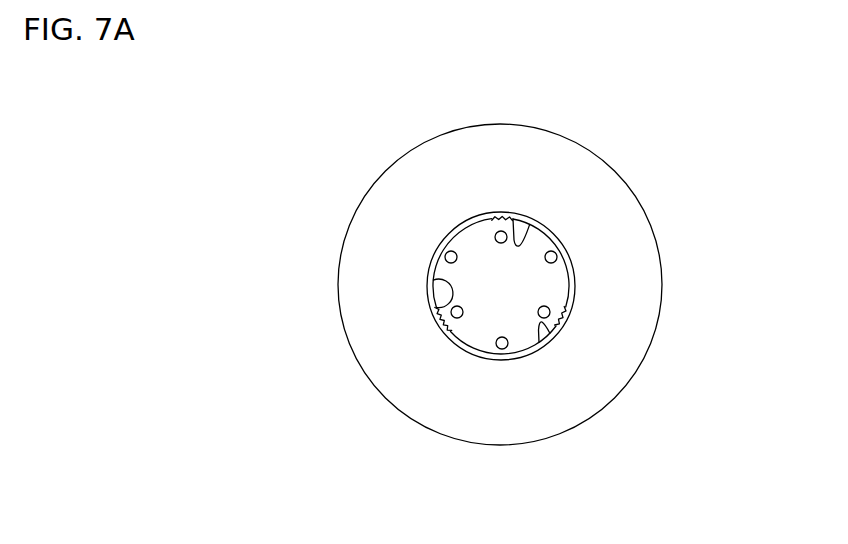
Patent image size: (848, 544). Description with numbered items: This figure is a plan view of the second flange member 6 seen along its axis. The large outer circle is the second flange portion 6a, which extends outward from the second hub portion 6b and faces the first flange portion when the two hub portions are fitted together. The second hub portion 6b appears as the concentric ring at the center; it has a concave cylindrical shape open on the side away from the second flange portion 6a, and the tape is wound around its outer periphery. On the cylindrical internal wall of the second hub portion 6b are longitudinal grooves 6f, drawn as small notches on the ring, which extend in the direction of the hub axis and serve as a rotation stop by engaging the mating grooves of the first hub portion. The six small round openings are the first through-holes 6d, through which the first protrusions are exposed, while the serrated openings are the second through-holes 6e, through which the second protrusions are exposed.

The second flange member 6 is at (745, 485).
The second flange portion 6a is at (549, 132).
The second hub portion 6b is at (573, 272).
The first through-holes 6d is at (446, 253).
The second through-holes 6e is at (493, 219).
The longitudinal grooves 6f is at (523, 234).